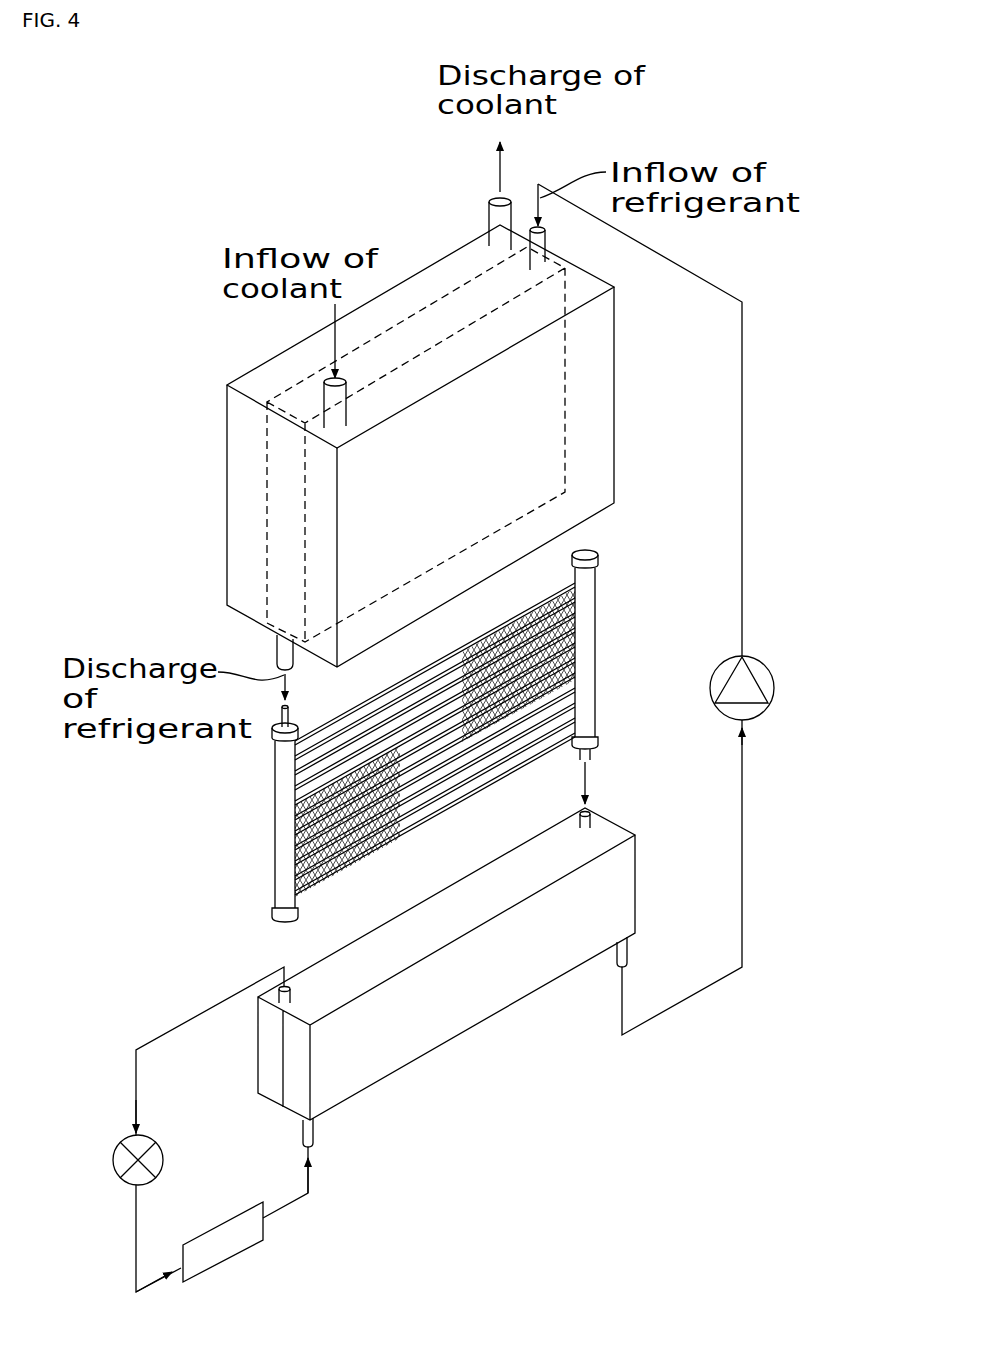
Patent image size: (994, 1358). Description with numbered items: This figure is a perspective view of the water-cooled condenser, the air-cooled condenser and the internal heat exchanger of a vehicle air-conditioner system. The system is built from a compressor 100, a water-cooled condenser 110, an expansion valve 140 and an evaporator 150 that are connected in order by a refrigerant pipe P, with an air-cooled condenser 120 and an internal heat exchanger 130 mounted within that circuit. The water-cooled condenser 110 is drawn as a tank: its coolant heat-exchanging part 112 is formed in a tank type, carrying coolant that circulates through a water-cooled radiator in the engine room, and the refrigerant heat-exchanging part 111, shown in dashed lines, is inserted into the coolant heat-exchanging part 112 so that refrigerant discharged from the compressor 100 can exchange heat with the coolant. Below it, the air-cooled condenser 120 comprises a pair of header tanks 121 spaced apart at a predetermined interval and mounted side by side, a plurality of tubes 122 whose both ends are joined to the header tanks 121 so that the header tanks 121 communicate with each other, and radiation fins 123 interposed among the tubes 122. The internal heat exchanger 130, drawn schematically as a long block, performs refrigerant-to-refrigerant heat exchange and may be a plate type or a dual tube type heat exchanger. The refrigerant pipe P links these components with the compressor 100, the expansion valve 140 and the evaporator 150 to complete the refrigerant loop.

The compressor 100 is at (774, 688).
The water-cooled condenser 110 is at (365, 434).
The refrigerant heat-exchanging part 111 is at (267, 515).
The coolant heat-exchanging part 112 is at (257, 367).
The air-cooled condenser 120 is at (412, 749).
The header tanks 121 is at (596, 650).
The tubes 122 is at (320, 892).
The radiation fins 123 is at (588, 660).
The internal heat exchanger 130 is at (432, 1060).
The expansion valve 140 is at (112, 1156).
The evaporator 150 is at (225, 1261).
The refrigerant pipe P is at (742, 480).